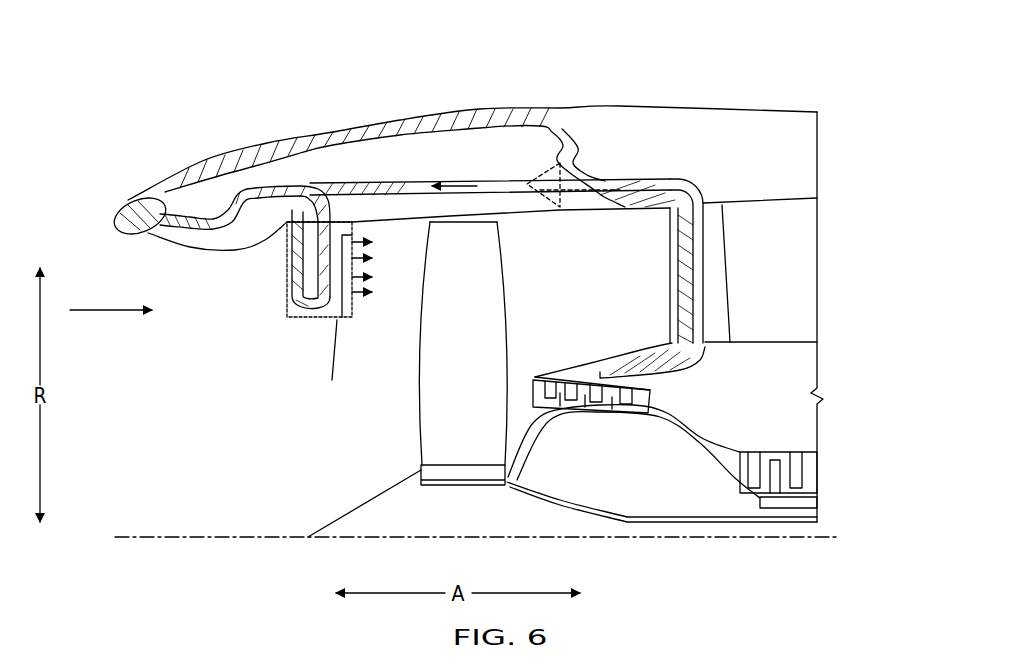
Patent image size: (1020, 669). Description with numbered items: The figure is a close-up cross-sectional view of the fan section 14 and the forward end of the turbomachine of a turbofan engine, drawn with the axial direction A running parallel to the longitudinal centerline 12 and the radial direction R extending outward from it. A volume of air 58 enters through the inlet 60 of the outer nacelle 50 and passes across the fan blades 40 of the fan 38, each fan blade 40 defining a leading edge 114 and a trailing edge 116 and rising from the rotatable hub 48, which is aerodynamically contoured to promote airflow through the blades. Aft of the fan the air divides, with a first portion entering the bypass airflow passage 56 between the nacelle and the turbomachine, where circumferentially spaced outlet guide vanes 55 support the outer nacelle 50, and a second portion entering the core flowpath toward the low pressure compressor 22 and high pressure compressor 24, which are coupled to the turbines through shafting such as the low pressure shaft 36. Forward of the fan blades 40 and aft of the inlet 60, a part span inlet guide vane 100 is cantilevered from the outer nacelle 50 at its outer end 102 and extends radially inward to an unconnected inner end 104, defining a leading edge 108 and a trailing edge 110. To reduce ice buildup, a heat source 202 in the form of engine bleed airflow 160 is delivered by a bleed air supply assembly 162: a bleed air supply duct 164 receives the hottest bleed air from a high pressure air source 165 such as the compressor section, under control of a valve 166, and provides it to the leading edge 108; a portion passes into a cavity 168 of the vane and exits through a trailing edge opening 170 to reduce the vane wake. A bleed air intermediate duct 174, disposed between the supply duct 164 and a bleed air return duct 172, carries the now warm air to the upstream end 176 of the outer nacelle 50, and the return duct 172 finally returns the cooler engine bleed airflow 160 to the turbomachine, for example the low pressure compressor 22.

The longitudinal centerline 12 is at (190, 541).
The fan section 14 is at (472, 126).
The low pressure compressor 22 is at (660, 380).
The high pressure compressor 24 is at (771, 436).
The low pressure shaft 36 is at (668, 524).
The fan 38 is at (474, 178).
The fan blade 40 is at (500, 340).
The hub 48 is at (310, 538).
The outer nacelle 50 is at (450, 111).
The outlet guide vanes 55 is at (722, 290).
The bypass airflow passage 56 is at (613, 301).
The volume of air 58 is at (123, 312).
The inlet 60 is at (104, 267).
The part span inlet guide vane 100 is at (280, 228).
The outer end 102 is at (340, 212).
The inner end 104 is at (316, 336).
The leading edge 108 is at (258, 301).
The trailing edge 110 is at (387, 334).
The leading edge 114 is at (408, 328).
The trailing edge 116 is at (515, 305).
The engine bleed airflow 160 is at (452, 175).
The bleed air supply assembly 162 is at (641, 154).
The bleed air supply duct 164 is at (479, 183).
The high pressure air source 165 is at (591, 429).
The valve 166 is at (570, 161).
The cavity 168 is at (334, 382).
The trailing edge opening 170 is at (356, 268).
The bleed air return duct 172 is at (372, 146).
The bleed air intermediate duct 174 is at (182, 232).
The upstream end 176 is at (126, 198).
The heat source 202 is at (600, 421).